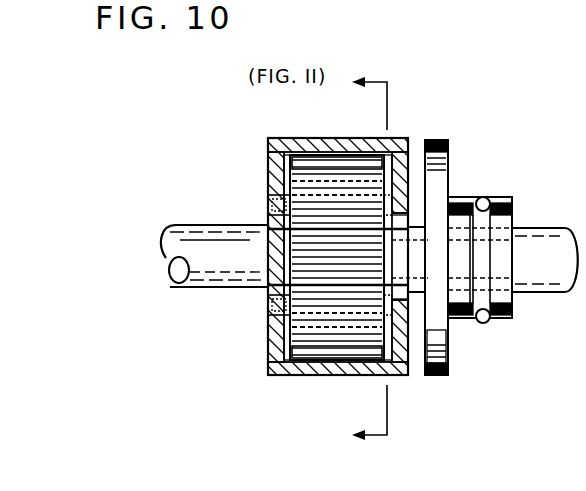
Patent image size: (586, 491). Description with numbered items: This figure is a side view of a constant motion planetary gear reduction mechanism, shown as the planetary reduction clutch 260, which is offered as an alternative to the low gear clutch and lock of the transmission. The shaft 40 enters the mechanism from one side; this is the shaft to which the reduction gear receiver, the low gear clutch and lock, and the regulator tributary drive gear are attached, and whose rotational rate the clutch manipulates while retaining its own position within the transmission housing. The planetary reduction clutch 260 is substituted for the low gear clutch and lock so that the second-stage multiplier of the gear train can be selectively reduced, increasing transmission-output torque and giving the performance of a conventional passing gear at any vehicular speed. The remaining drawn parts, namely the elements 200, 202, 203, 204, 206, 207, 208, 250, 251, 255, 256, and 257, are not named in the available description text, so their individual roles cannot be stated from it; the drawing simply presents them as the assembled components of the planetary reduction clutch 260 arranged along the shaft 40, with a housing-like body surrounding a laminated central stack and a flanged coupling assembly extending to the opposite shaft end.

The shaft 40 is at (178, 272).
The electric motor 200 is at (268, 285).
The end plate 202 is at (272, 332).
The bearing 203 is at (282, 212).
The motor housing 204 is at (287, 140).
The stator 206 is at (307, 173).
The end plate 207 is at (278, 336).
The bearing 208 is at (410, 378).
The flywheel hub 250 is at (437, 378).
The flange plate 251 is at (427, 138).
The coupling 255 is at (515, 228).
The retaining ball 256 is at (503, 323).
The detent ball 257 is at (483, 323).
The planetary reduction clutch 260 is at (305, 378).